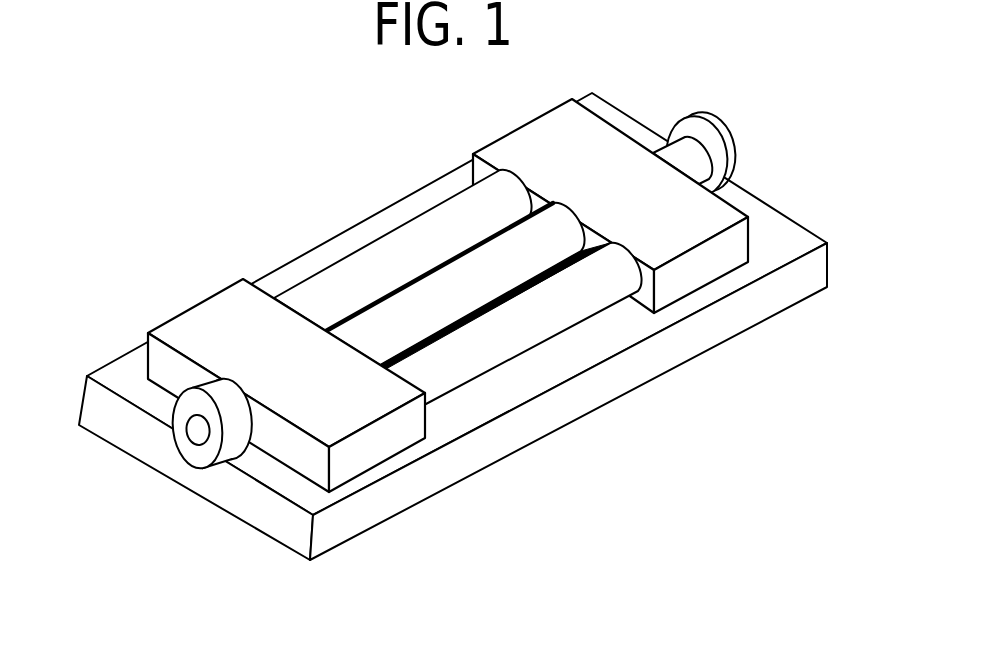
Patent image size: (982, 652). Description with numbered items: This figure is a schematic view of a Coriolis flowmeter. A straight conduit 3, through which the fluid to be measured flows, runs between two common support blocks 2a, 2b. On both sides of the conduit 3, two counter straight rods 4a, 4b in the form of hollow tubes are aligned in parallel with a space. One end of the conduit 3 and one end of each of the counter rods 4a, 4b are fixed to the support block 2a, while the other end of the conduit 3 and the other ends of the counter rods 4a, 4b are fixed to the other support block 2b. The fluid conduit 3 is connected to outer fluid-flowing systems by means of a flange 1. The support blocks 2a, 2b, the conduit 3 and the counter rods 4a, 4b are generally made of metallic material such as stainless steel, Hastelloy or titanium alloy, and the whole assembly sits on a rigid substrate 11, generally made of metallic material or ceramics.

The flange 1 is at (177, 410).
The common support block 2a is at (207, 318).
The common support block 2b is at (557, 140).
The straight conduit 3 is at (462, 282).
The counter straight rod 4a is at (393, 257).
The counter straight rod 4b is at (513, 323).
The rigid substrate 11 is at (520, 390).